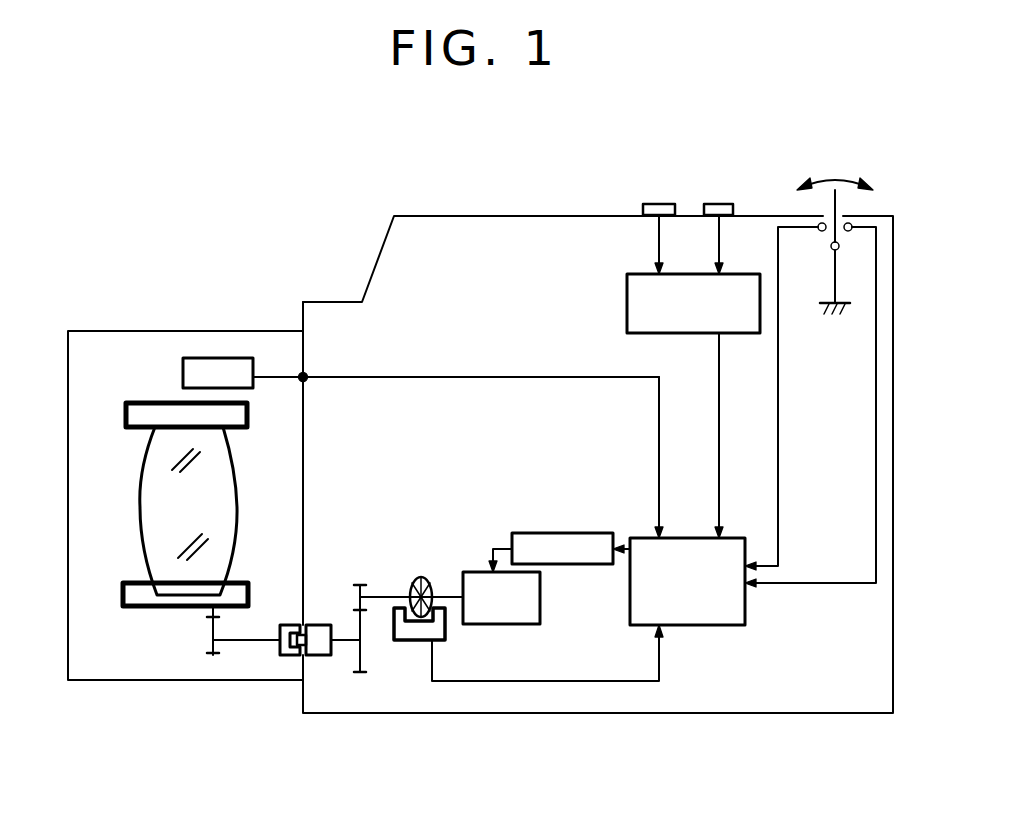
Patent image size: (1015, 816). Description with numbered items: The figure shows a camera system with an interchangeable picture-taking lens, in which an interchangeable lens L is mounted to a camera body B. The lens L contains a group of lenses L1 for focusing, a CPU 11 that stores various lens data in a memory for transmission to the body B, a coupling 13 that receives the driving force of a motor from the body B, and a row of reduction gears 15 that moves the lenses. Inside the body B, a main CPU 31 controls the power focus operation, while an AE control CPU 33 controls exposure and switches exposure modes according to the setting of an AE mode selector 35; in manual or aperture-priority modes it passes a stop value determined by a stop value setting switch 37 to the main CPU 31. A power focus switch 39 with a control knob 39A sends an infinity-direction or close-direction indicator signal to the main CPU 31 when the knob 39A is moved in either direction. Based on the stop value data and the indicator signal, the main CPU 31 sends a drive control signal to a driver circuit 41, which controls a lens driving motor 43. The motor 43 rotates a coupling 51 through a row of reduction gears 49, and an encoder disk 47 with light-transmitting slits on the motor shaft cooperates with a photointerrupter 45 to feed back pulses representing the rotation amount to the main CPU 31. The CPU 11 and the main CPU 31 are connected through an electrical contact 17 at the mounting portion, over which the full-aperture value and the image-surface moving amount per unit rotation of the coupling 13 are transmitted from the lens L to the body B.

The camera body B is at (430, 216).
The interchangeable lens L is at (110, 331).
The group of lenses L1 is at (232, 513).
The microcomputer (CPU) 11 is at (203, 358).
The coupling 13 is at (284, 656).
The row of reduction gears 15 is at (213, 658).
The electrical contact 17 is at (303, 377).
The main CPU 31 is at (715, 614).
The AE control CPU 33 is at (627, 290).
The AE mode selector 35 is at (658, 204).
The stop value setting switch 37 is at (720, 204).
The power focus switch 39 is at (848, 233).
The control knob 39A is at (838, 198).
The driver circuit 41 is at (585, 533).
The lens driving motor 43 is at (522, 615).
The photointerrupter 45 is at (418, 630).
The encoder disk 47 is at (420, 578).
The row of reduction gears 49 is at (363, 658).
The coupling 51 is at (322, 660).